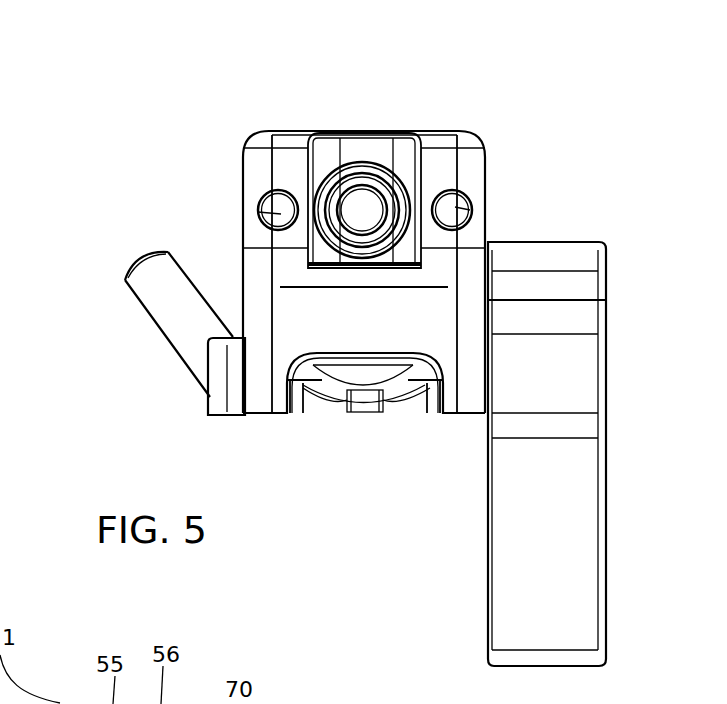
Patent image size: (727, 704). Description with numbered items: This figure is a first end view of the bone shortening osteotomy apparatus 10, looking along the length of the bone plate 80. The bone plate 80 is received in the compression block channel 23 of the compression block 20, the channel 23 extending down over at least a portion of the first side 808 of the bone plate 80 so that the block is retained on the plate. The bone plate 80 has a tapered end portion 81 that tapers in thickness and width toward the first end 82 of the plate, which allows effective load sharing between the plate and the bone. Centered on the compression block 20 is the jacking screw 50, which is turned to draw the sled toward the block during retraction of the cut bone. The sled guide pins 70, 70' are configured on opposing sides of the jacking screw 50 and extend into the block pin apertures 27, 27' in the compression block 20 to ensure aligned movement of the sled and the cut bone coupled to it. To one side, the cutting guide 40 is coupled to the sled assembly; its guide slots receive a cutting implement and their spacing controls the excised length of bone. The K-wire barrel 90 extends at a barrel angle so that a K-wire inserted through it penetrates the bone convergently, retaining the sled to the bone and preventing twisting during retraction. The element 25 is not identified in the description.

The bone shortening osteotomy apparatus 10 is at (215, 112).
The compression block 20 is at (362, 153).
The inner ring 25 is at (375, 177).
The jacking screw 50 is at (360, 208).
The sled guide pin 70 is at (262, 143).
The sled guide pin 70' is at (494, 143).
The block pin aperture 27 is at (219, 179).
The block pin aperture 27' is at (521, 161).
The cutting guide 40 is at (538, 257).
The K-wire barrel 90 is at (148, 283).
The first side of the bone plate 808 is at (287, 384).
The tapered end portion 81 is at (350, 373).
The bone plate 80 is at (365, 402).
The first end of the bone plate 82 is at (400, 408).
The compression block channel 23 is at (447, 417).